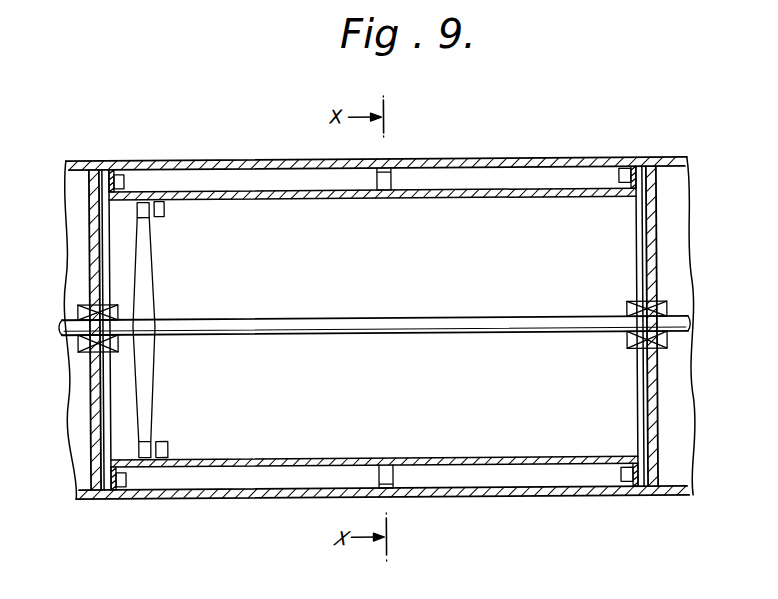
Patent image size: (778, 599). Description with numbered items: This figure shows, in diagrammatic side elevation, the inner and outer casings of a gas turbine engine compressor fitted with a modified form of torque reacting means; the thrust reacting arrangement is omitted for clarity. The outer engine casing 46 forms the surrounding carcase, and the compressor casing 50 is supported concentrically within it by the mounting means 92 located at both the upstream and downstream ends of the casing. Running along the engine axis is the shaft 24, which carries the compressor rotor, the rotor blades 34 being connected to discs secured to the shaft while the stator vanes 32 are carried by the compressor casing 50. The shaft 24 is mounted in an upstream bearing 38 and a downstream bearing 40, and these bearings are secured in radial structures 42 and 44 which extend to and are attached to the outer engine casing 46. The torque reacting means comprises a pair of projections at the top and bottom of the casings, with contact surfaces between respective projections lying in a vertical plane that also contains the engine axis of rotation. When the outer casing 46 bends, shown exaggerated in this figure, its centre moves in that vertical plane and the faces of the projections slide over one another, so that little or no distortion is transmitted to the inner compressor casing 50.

The shaft 24 is at (287, 316).
The stator vanes 32 is at (163, 206).
The rotor blades 34 is at (152, 437).
The upstream bearing 38 is at (117, 306).
The downstream bearing 40 is at (627, 301).
The radial structure 42 is at (90, 221).
The radial structure 44 is at (660, 237).
The outer engine casing 46 is at (215, 162).
The compressor casing 50 is at (262, 193).
The mounting means 92 is at (124, 177).